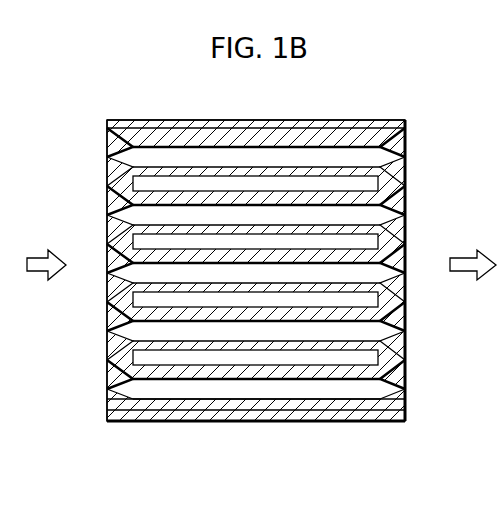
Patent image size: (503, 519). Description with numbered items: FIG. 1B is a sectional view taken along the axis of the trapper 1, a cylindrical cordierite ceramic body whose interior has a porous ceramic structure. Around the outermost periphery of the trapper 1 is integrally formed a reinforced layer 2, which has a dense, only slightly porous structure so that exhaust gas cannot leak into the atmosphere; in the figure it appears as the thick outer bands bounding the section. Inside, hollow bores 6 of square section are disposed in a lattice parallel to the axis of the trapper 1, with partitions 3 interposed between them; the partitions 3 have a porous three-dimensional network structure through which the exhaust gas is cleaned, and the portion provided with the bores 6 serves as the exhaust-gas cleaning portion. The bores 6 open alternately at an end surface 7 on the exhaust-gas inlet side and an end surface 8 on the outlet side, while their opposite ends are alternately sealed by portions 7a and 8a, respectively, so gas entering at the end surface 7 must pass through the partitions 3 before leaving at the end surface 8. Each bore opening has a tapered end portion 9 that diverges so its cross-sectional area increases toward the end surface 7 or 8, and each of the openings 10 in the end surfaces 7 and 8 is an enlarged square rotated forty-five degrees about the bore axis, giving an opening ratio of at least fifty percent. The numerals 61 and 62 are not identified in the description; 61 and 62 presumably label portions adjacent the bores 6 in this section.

The trapper 1 is at (177, 430).
The reinforced layer 2 is at (382, 415).
The partitions 3 is at (158, 367).
The hollow bores 6 is at (227, 408).
The outlet passage 61 is at (268, 385).
The inner channel 62 is at (308, 355).
The end surface 7 is at (107, 129).
The sealing portion 7a is at (397, 201).
The end surface 8 is at (405, 397).
The sealing portion 8a is at (107, 383).
The tapered end portion 9 is at (108, 232).
The openings 10 is at (107, 213).